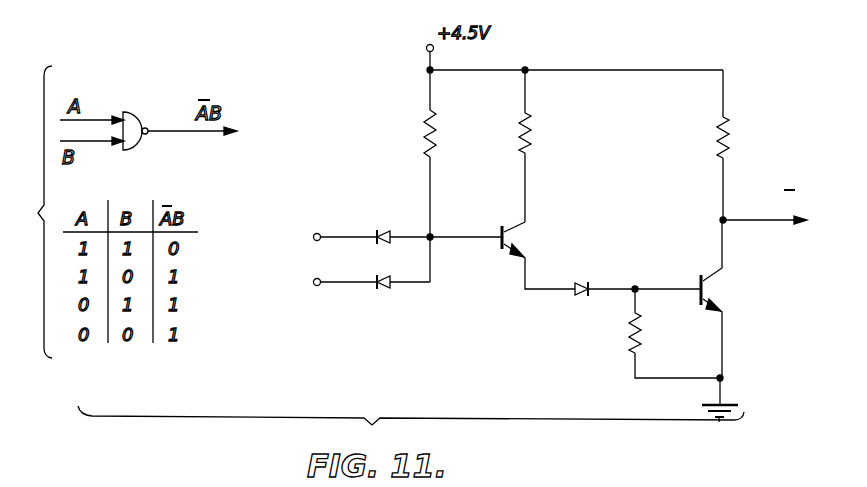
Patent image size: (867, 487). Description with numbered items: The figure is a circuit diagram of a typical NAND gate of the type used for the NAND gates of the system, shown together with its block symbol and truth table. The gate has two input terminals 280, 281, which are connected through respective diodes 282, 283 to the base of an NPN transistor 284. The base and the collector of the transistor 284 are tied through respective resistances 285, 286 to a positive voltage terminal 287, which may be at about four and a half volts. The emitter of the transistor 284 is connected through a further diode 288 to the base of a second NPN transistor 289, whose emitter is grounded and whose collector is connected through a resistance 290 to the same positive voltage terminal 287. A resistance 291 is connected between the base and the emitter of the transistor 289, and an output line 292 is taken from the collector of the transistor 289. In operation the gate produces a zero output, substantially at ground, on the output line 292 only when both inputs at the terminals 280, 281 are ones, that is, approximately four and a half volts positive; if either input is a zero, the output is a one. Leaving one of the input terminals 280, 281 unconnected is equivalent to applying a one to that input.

The input terminal 280 is at (313, 237).
The input terminal 281 is at (313, 282).
The diode 282 is at (386, 232).
The diode 283 is at (389, 289).
The NPN transistor 284 is at (503, 250).
The resistance 285 is at (421, 139).
The resistance 286 is at (529, 150).
The positive voltage terminal 287 is at (426, 48).
The diode 288 is at (583, 284).
The NPN transistor 289 is at (712, 292).
The resistance 290 is at (729, 146).
The resistance 291 is at (630, 329).
The output line 292 is at (781, 224).